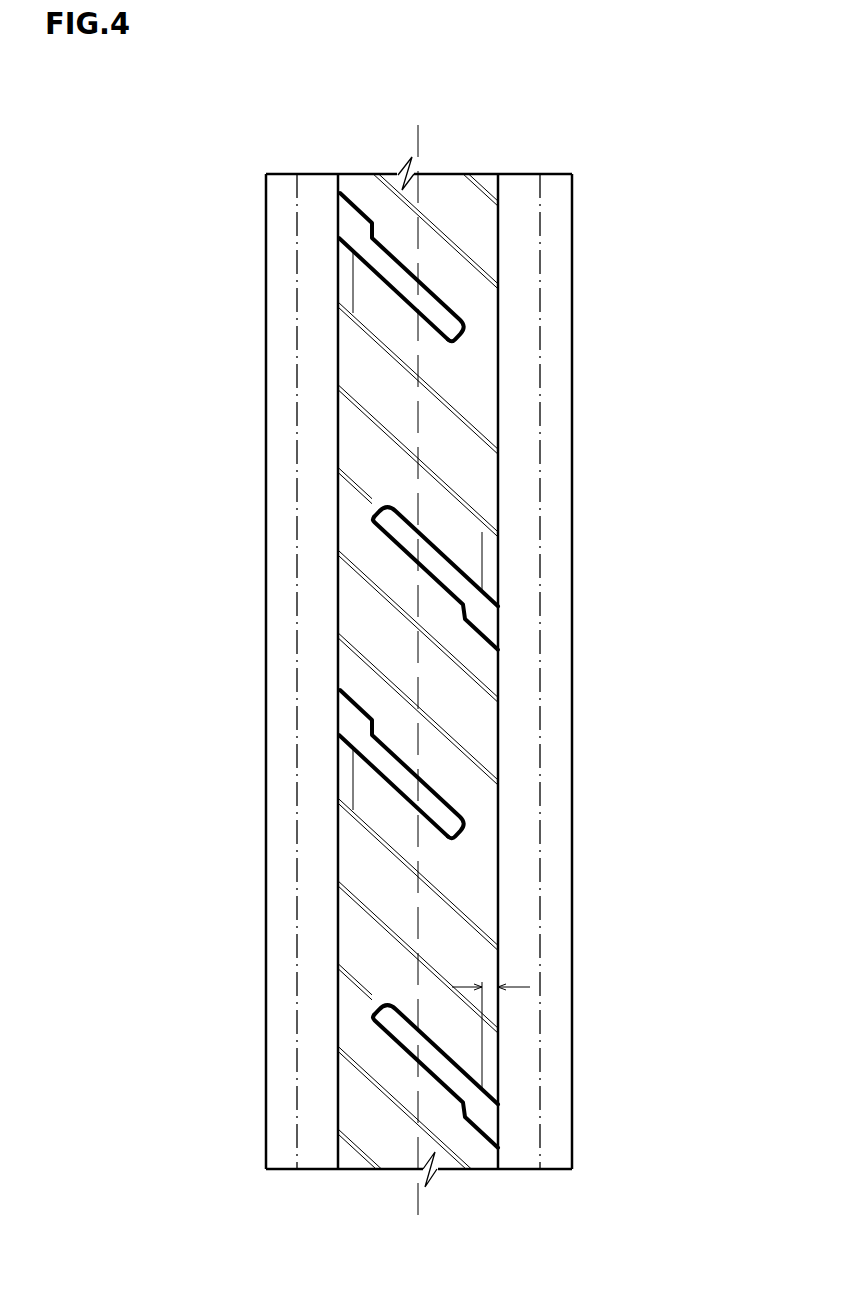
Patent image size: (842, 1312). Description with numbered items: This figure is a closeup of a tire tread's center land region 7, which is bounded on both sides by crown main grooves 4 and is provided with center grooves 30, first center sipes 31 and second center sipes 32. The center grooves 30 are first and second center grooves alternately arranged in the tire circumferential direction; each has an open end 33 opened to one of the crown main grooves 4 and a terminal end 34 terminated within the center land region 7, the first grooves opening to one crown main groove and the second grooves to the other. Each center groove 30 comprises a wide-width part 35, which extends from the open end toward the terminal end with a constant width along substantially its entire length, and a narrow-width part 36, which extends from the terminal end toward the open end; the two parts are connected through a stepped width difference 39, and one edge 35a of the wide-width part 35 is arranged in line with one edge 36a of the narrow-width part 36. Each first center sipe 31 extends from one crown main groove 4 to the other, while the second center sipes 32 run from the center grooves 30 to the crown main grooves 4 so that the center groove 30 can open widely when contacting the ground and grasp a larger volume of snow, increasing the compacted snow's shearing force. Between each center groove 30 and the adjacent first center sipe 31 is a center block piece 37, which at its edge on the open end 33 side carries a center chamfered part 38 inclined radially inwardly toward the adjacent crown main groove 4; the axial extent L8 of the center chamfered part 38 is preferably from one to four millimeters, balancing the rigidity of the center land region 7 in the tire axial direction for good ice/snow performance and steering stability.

The crown main groove 4 is at (315, 222).
The center land region 7 is at (452, 209).
The center groove 30 is at (418, 670).
The first center sipe 31 is at (472, 927).
The second center sipe 32 is at (333, 487).
The open end 33 is at (336, 693).
The terminal end 34 is at (372, 508).
The wide-width part 35 is at (352, 730).
The narrow-width part 36 is at (410, 788).
The center block piece 37 is at (387, 818).
The center chamfered part 38 is at (347, 777).
The stepped width difference 39 is at (470, 682).
The axial extent of the center chamfered part L8 is at (500, 975).
The edge of the wide-width part 35a is at (480, 1107).
The edge of the narrow-width part 36a is at (400, 1100).